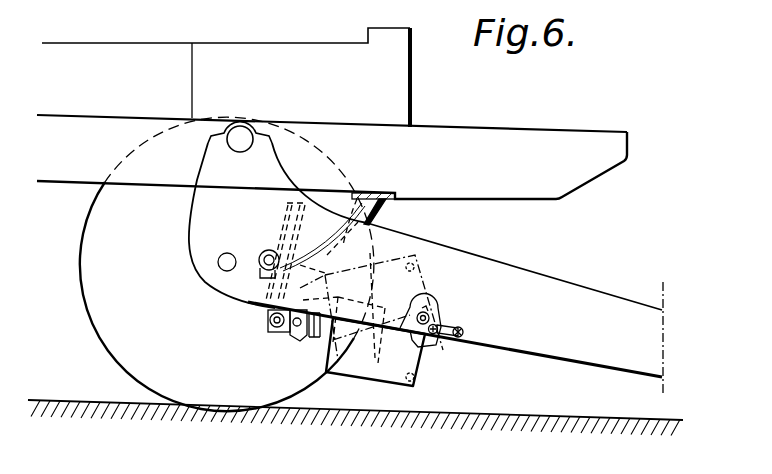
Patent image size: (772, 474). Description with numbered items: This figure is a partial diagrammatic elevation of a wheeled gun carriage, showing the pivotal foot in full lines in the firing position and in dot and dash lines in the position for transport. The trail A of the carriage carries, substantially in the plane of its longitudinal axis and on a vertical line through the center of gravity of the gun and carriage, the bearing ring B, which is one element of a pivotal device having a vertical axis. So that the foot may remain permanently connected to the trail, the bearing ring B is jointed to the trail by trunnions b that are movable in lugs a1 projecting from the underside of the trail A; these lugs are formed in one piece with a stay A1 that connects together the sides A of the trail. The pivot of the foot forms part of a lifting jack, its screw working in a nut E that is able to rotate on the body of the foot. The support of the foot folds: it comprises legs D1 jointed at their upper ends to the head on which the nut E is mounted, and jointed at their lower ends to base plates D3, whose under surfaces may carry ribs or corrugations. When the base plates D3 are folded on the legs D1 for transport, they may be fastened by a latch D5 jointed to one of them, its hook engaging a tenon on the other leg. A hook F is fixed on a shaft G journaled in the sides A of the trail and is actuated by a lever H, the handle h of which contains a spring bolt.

The trail A is at (558, 292).
The stay A1 is at (283, 217).
The lugs a1 is at (271, 313).
The trunnions b is at (268, 323).
The bearing ring B is at (276, 329).
The nut E is at (296, 333).
The legs D1 is at (325, 337).
The base plate D3 is at (382, 372).
The latch D5 is at (429, 317).
The hook F is at (421, 312).
The shaft G is at (434, 338).
The lever H is at (450, 335).
The handle h is at (463, 331).